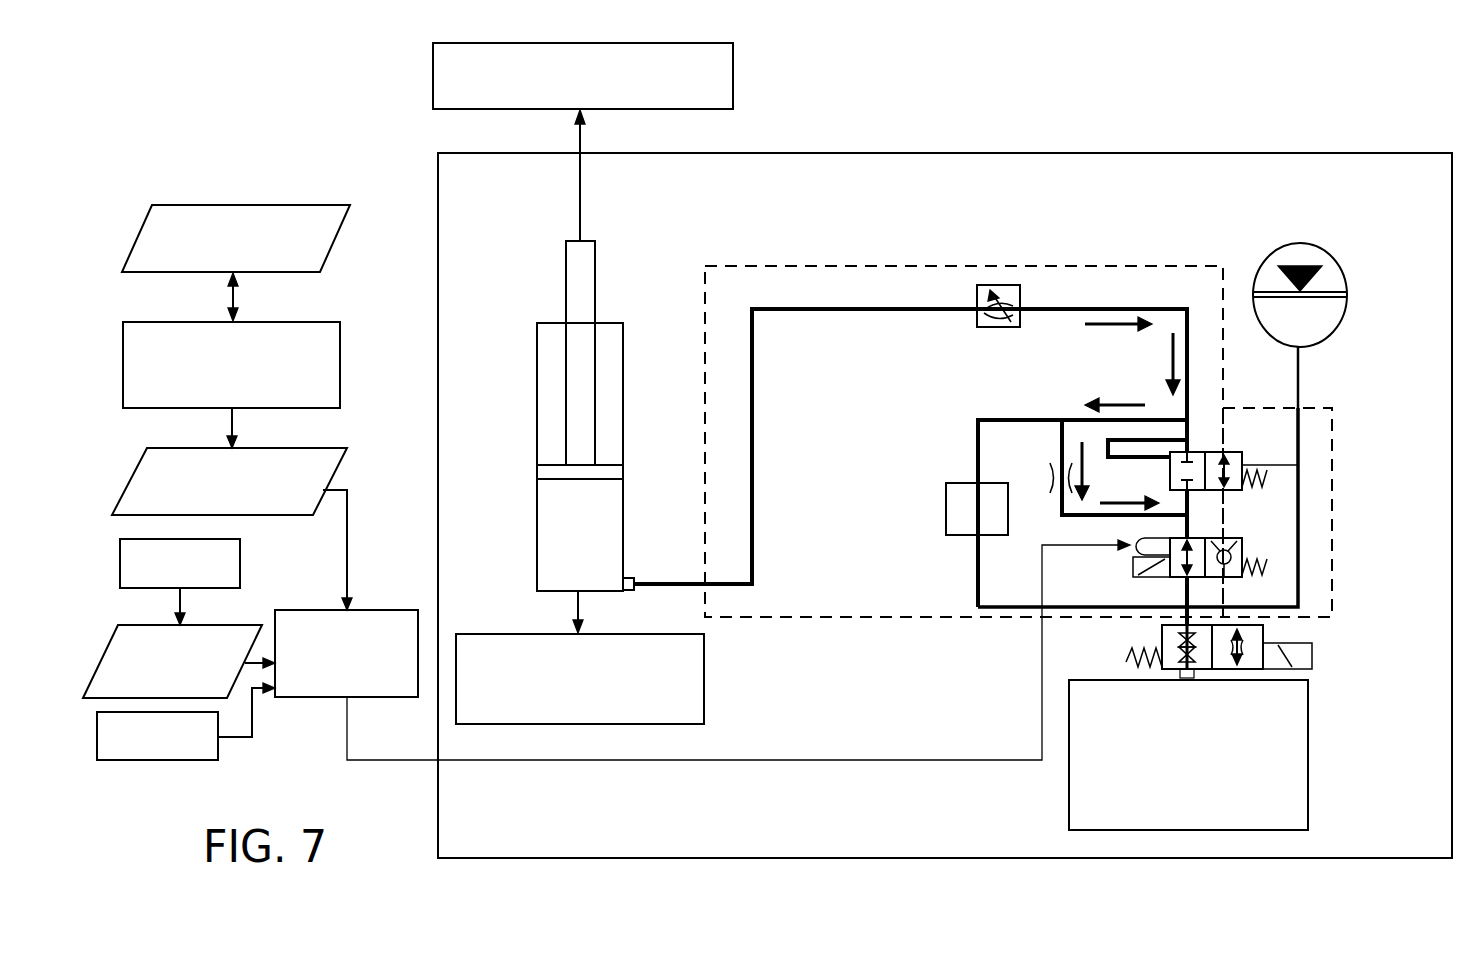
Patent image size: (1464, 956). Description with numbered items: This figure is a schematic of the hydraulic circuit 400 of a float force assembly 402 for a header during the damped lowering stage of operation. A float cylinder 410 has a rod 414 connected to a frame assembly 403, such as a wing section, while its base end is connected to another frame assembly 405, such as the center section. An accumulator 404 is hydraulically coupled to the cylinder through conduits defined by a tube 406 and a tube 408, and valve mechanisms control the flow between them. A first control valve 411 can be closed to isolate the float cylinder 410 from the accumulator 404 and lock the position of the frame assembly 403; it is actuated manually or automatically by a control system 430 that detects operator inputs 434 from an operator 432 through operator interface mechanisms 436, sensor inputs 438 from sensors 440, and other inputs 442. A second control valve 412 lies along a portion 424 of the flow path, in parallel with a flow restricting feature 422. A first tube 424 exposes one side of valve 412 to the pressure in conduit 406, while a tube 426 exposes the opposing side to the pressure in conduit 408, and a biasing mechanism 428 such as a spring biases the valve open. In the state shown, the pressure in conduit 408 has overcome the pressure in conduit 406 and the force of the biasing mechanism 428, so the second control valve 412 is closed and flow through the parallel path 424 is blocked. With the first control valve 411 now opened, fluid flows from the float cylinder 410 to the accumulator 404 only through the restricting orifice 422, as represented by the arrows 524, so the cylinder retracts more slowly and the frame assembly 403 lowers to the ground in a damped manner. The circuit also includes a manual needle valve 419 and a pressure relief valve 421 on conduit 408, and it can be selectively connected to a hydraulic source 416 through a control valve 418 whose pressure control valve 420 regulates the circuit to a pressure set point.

The hydraulic circuit 400 is at (954, 290).
The float force assembly 402 is at (1020, 178).
The frame assembly 403 is at (705, 73).
The accumulator 404 is at (1307, 241).
The frame assembly 405 is at (524, 689).
The tube 406 is at (1300, 390).
The tube 408 is at (767, 312).
The float cylinder 410 is at (607, 322).
The first control valve 411 is at (1236, 538).
The second control valve 412 is at (1195, 452).
The rod 414 is at (569, 243).
The hydraulic source 416 is at (1305, 738).
The control valve 418 is at (1160, 628).
The manual valve 419 is at (977, 318).
The pressure control valve 420 is at (1245, 645).
The pressure relief valve 421 is at (946, 514).
The flow restricting feature 422 is at (1052, 478).
The first tube 424 is at (1192, 430).
The tube 426 is at (1107, 455).
The biasing mechanism 428 is at (1260, 488).
The control system 430 is at (405, 675).
The operator 432 is at (253, 260).
The operator inputs 434 is at (290, 501).
The operator interface mechanism(s) 436 is at (322, 398).
The sensor input(s) 438 is at (187, 696).
The sensors 440 is at (195, 586).
The other inputs 442 is at (208, 746).
The arrows 524 is at (1171, 358).